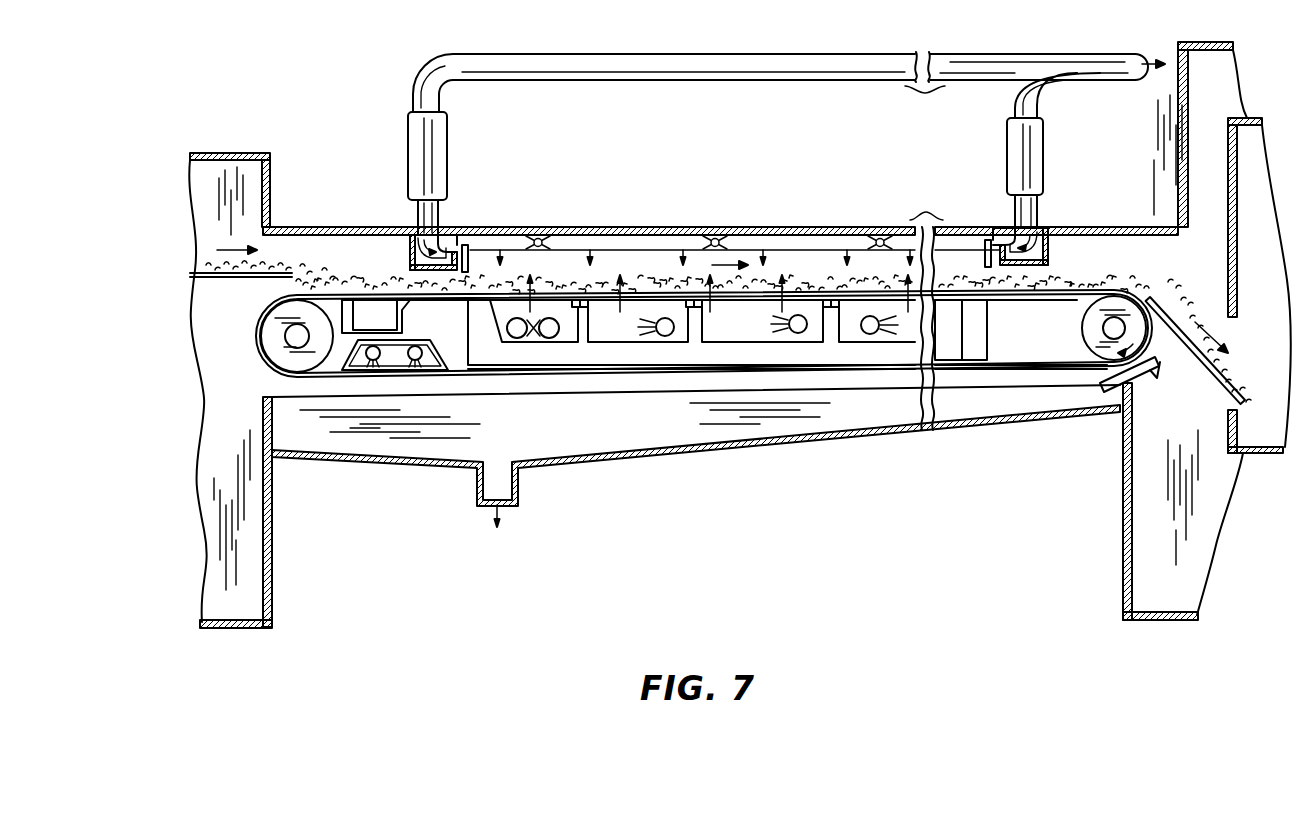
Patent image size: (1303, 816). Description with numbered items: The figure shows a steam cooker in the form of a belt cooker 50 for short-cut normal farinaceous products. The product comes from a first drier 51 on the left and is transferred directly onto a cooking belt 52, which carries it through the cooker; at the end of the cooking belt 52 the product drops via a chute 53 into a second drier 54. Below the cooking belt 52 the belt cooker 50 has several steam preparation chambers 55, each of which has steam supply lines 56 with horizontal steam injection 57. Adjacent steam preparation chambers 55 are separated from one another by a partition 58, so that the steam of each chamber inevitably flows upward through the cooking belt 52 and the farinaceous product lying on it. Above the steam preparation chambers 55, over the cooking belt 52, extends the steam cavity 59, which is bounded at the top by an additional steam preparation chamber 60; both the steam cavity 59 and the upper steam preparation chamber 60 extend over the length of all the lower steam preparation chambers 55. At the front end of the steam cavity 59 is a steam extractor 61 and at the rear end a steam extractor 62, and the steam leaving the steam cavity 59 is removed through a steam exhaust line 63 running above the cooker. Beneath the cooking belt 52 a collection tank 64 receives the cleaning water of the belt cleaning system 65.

The belt cooker 50 is at (392, 93).
The first drier 51 is at (250, 153).
The cooking belt 52 is at (332, 290).
The chute 53 is at (1197, 353).
The second drier 54 is at (1263, 455).
The steam preparation chambers 55 is at (710, 332).
The steam supply lines 56 is at (549, 340).
The horizontal steam injection 57 is at (947, 332).
The partition 58 is at (843, 339).
The steam cavity 59 is at (660, 270).
The additional steam preparation chamber 60 is at (638, 243).
The steam extractor 61 is at (440, 237).
The steam extractor 62 is at (1010, 228).
The steam exhaust line 63 is at (814, 72).
The collection tank 64 is at (440, 438).
The belt cleaning system 65 is at (393, 360).